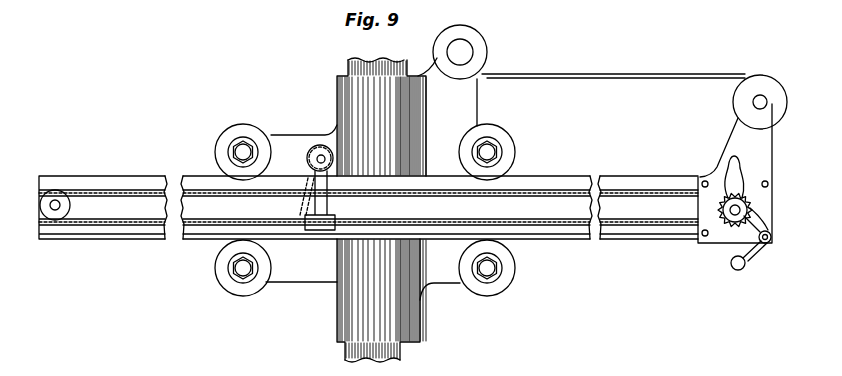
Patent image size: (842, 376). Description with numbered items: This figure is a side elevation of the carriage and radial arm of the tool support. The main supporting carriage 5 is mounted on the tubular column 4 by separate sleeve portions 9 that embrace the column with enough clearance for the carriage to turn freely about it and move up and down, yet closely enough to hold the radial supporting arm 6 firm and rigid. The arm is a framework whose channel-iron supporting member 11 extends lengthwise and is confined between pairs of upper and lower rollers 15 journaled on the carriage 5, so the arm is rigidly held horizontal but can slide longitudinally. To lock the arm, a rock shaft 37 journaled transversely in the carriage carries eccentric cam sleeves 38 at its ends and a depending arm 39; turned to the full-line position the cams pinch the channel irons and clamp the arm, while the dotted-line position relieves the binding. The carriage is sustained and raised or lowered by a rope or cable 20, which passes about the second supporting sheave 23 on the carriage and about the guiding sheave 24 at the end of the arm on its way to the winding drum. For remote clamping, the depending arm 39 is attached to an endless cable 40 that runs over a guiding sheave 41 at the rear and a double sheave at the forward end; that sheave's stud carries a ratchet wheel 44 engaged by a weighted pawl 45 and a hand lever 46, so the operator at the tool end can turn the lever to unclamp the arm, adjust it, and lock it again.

The column 4 is at (398, 347).
The main supporting carriage 5 is at (318, 272).
The radial supporting arm 6 is at (580, 260).
The sleeve portions 9 is at (337, 90).
The supporting member 11 is at (150, 242).
The rollers 15 is at (240, 124).
The rope or cable 20 is at (579, 74).
The second supporting sheave 23 is at (488, 46).
The guiding sheave 24 is at (759, 79).
The rock shaft 37 is at (318, 146).
The eccentric cam sleeves 38 is at (308, 160).
The depending arm 39 is at (315, 207).
The endless cable or rope 40 is at (456, 218).
The guiding sheave 41 is at (57, 190).
The ratchet wheel 44 is at (722, 240).
The weighted pawl 45 is at (760, 240).
The hand lever 46 is at (739, 165).